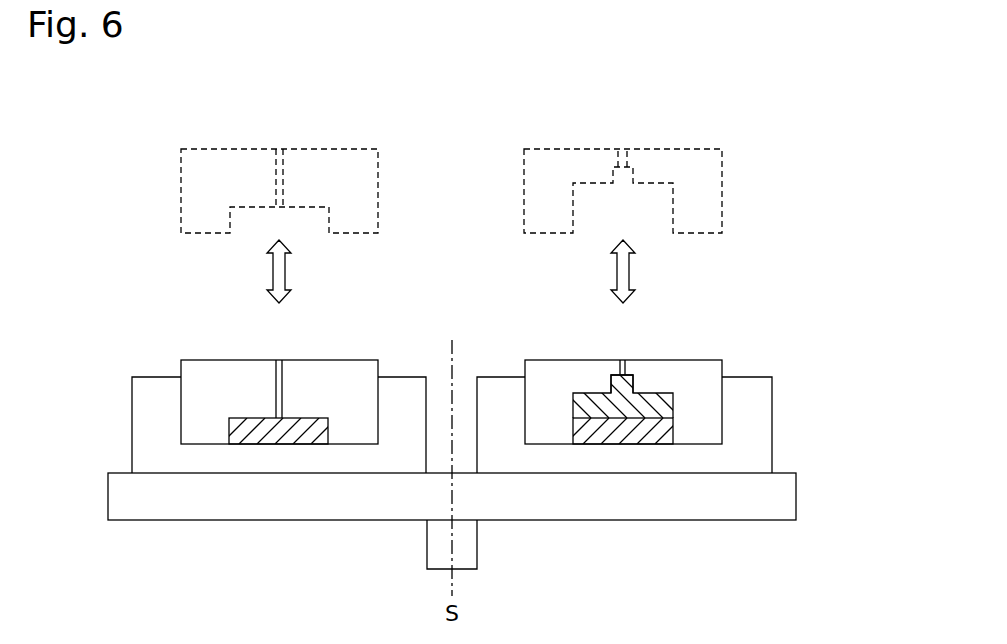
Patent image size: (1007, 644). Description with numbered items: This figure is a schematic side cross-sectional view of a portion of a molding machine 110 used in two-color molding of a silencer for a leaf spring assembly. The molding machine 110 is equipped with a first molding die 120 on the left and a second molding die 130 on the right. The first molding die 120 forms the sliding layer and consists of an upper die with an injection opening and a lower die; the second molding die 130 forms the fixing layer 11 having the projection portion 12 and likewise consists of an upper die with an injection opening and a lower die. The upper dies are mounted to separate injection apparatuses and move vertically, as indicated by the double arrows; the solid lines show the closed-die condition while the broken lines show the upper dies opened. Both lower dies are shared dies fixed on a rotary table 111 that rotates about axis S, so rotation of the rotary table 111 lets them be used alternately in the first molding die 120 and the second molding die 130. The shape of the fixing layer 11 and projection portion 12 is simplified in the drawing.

The molding machine 110 is at (740, 143).
The first molding die 120 is at (137, 342).
The second molding die 130 is at (740, 297).
The rotary table 111 is at (780, 500).
The fixing layer 11 is at (590, 400).
The projection portion 12 is at (612, 385).